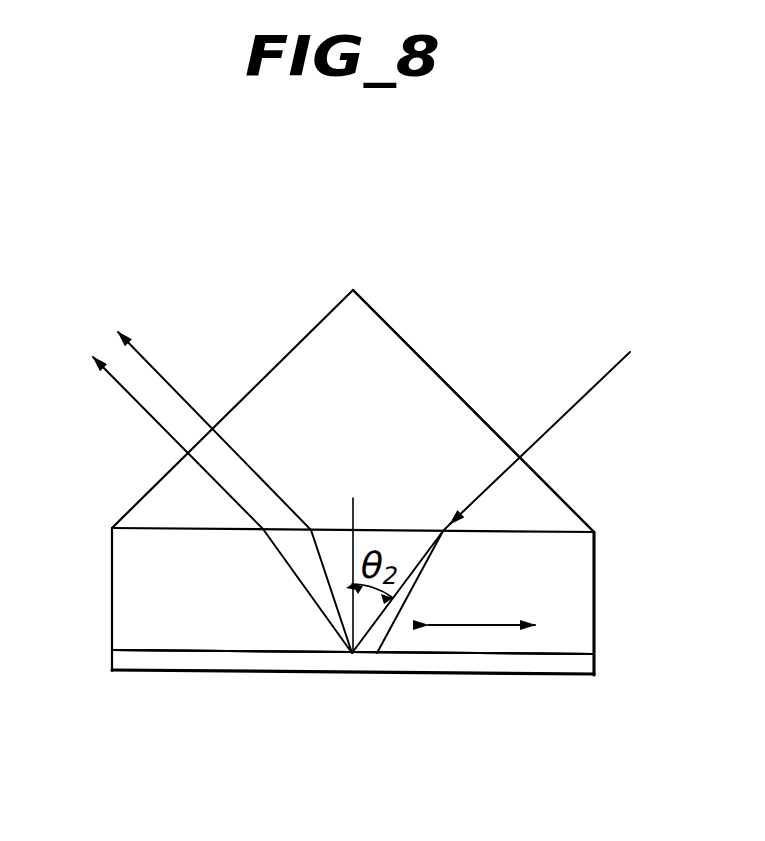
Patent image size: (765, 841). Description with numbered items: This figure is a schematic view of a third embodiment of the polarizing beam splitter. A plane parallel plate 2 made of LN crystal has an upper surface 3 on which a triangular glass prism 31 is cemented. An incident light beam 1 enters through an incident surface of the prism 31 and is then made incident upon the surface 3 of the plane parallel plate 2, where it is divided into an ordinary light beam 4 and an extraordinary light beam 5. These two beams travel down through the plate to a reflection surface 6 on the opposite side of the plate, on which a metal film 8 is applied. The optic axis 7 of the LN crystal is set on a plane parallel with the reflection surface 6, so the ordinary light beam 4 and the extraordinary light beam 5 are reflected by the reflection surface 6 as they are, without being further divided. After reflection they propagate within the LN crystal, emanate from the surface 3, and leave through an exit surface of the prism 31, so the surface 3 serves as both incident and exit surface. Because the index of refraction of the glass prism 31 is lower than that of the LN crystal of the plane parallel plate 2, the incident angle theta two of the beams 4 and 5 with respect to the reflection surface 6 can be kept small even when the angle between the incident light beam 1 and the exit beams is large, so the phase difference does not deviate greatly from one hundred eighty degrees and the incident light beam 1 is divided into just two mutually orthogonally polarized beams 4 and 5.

The incident light beam 1 is at (603, 378).
The plane parallel plate 2 is at (571, 572).
The surface 3 is at (547, 531).
The triangular glass prism 31 is at (428, 388).
The ordinary light beam 4 is at (366, 633).
The extraordinary light beam 5 is at (394, 620).
The reflection surface 6 is at (171, 650).
The optic axis 7 is at (495, 626).
The metal film 8 is at (292, 663).